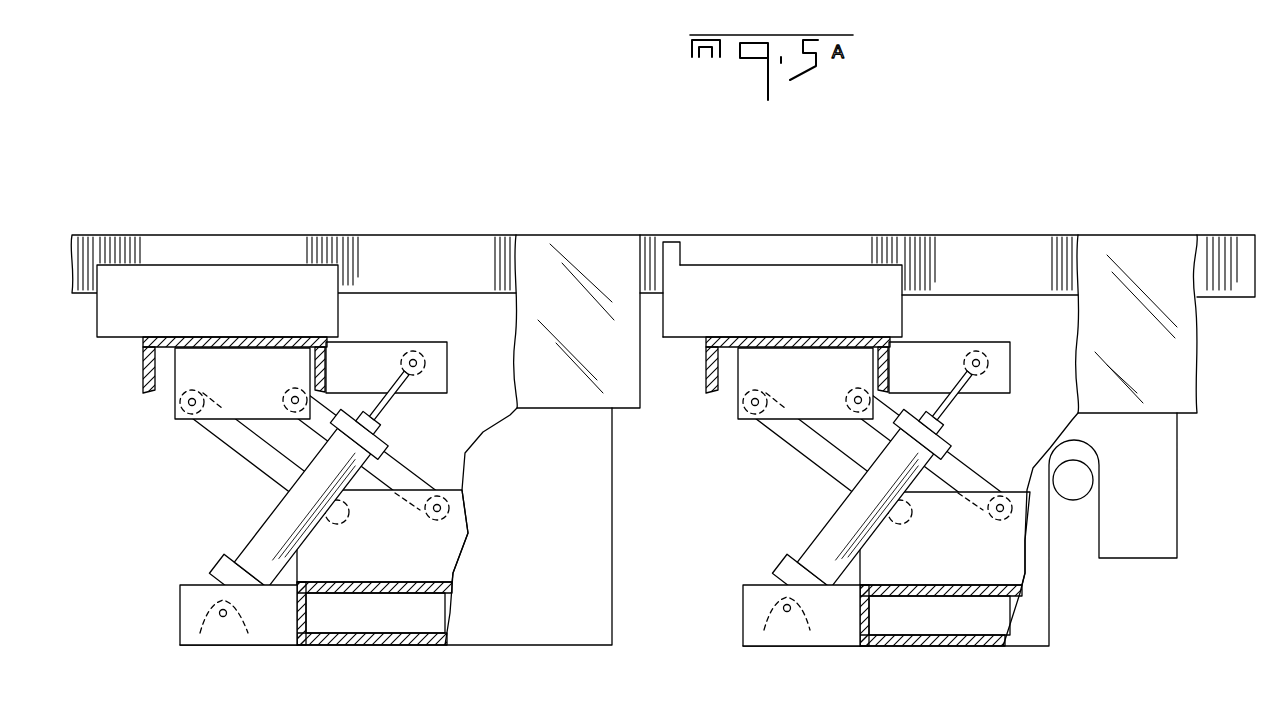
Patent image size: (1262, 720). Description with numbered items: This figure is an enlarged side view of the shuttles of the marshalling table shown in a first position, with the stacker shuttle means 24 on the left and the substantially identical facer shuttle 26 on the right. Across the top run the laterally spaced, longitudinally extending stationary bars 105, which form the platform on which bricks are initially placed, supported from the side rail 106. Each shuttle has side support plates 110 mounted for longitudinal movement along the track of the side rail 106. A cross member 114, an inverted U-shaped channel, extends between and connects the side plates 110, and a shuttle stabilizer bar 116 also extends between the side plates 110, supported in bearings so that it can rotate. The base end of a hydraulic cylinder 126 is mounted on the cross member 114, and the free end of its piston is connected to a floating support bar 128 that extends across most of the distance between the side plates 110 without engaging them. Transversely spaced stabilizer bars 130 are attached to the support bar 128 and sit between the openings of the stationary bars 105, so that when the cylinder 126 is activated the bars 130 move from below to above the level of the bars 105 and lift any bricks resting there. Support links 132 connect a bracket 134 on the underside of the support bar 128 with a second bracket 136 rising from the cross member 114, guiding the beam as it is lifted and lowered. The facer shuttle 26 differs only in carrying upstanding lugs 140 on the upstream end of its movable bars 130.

The stacker shuttle means 24 is at (367, 150).
The facer shuttle 26 is at (984, 160).
The stationary bars 105 is at (545, 245).
The side rail 106 is at (84, 237).
The side support plates 110 is at (605, 478).
The cross member 114 is at (370, 648).
The shuttle stabilizer bar 116 is at (1073, 500).
The hydraulic cylinders 126 is at (272, 513).
The floating support bar 128 is at (277, 338).
The stabilizer bars 130 is at (242, 270).
The support links 132 is at (232, 442).
The bracket 134 is at (222, 378).
The second bracket 136 is at (365, 551).
The upstanding lugs 140 is at (672, 240).